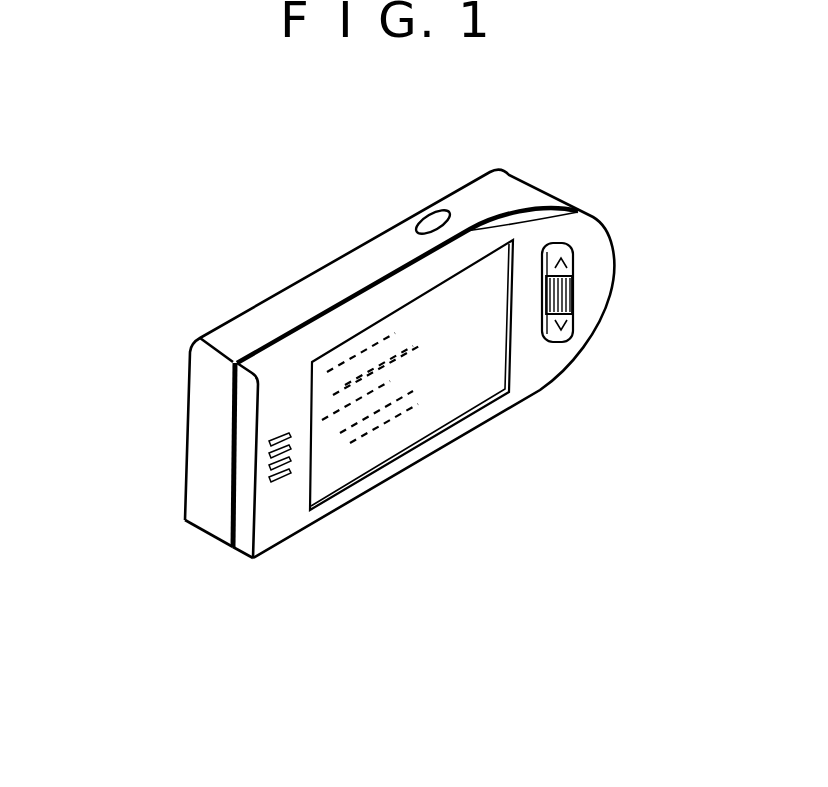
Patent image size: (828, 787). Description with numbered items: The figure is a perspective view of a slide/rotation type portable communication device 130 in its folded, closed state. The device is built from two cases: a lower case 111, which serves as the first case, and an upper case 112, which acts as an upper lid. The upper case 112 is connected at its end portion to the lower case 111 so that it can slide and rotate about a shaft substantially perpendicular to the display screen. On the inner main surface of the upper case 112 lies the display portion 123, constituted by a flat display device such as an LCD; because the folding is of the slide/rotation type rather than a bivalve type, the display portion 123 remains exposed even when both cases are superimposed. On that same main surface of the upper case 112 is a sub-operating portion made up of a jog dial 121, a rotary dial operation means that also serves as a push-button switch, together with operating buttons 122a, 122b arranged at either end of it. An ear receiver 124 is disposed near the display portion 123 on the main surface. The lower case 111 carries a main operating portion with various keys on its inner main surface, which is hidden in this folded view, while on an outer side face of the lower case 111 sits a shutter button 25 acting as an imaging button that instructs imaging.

The portable communication device 130 is at (243, 204).
The lower case 111 is at (202, 532).
The upper case 112 is at (237, 550).
The jog dial 121 is at (567, 287).
The operating button 122a is at (560, 250).
The operating button 122b is at (560, 340).
The display portion 123 is at (417, 415).
The ear receiver 124 is at (280, 478).
The shutter button 25 is at (431, 217).